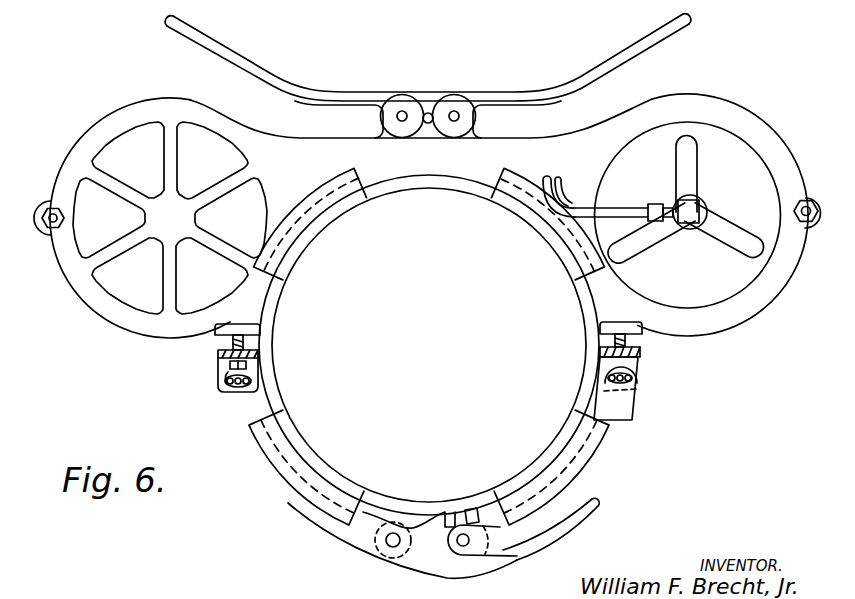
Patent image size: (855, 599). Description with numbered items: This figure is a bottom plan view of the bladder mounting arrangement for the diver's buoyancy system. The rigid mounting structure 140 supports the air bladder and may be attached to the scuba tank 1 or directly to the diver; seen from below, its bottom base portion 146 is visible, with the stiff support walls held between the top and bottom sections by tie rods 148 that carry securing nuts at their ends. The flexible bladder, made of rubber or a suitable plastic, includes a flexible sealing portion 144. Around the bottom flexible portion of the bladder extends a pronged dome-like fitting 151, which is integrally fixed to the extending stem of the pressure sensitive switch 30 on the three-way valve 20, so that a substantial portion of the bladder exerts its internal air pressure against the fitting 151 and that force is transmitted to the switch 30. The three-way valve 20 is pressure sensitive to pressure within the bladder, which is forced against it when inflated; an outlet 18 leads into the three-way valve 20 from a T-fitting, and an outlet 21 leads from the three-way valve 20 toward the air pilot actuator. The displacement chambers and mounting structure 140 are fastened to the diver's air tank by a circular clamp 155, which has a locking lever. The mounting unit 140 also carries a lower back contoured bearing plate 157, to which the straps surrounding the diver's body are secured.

The scuba tank 1 is at (395, 364).
The outlet 18 is at (657, 204).
The three-way valve 20 is at (708, 208).
The outlet 21 is at (568, 187).
The pressure sensitive switch 30 is at (692, 192).
The mounting structure 140 is at (447, 150).
The flexible sealing portion 144 is at (510, 564).
The bottom base portion 146 is at (103, 305).
The tie rods 148 is at (50, 206).
The pronged dome-like fitting 151 is at (725, 236).
The circular clamp 155 is at (298, 514).
The lower back contoured bearing plate 157 is at (213, 62).